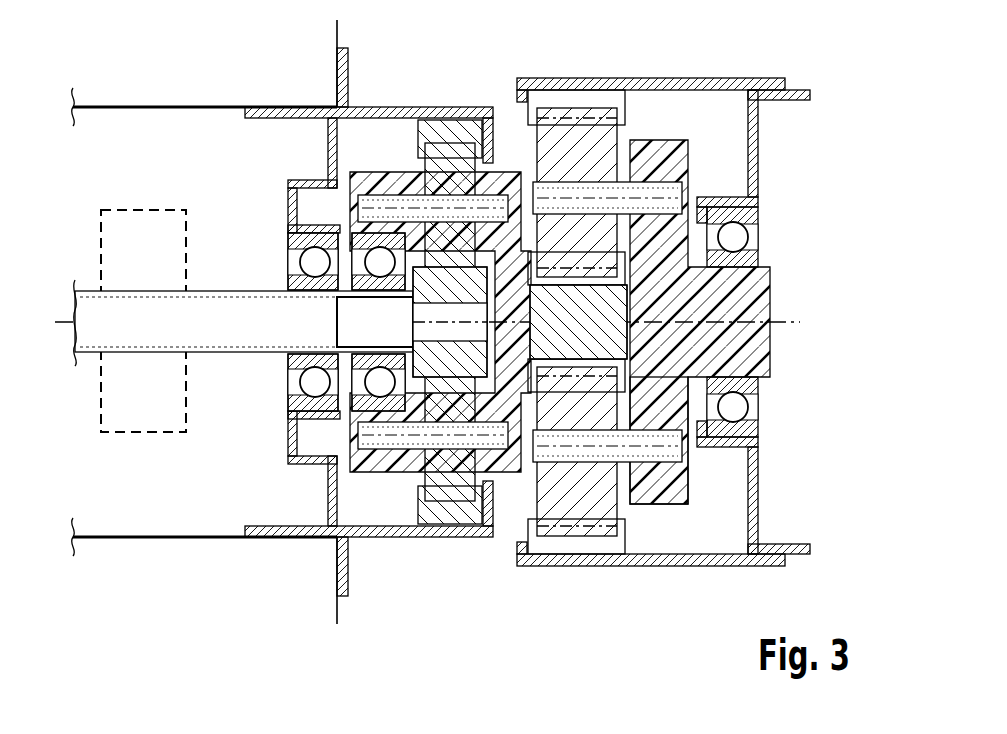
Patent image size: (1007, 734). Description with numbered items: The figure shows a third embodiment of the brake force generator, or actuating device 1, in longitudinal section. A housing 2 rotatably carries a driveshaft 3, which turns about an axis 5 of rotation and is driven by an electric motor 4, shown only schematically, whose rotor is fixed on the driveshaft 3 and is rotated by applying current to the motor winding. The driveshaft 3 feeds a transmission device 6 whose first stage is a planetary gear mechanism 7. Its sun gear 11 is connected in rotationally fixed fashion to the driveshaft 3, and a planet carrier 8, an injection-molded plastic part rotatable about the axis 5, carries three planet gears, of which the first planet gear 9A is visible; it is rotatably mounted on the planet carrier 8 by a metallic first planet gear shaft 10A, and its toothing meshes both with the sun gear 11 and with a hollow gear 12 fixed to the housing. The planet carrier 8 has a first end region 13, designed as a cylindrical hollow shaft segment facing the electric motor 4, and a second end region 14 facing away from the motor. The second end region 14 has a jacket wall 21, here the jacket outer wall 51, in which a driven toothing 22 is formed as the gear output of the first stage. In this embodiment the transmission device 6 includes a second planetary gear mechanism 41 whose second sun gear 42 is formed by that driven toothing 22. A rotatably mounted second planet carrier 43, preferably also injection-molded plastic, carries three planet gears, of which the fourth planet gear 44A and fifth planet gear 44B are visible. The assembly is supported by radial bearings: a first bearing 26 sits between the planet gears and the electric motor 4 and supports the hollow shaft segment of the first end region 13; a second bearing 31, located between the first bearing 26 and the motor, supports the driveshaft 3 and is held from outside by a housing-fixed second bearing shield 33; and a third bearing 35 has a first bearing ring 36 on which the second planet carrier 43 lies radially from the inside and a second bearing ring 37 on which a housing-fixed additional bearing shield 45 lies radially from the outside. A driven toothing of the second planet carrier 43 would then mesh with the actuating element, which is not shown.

The actuating device 1 is at (385, 564).
The housing 2 is at (160, 107).
The driveshaft 3 is at (200, 300).
The electric motor 4 is at (140, 432).
The axis of rotation 5 is at (213, 330).
The transmission device 6 is at (457, 572).
The planetary gear mechanism 7 is at (463, 81).
The planet carrier 8 is at (500, 182).
The first planet gear 9A is at (447, 155).
The first planet gear shaft 10A is at (468, 203).
The sun gear 11 is at (425, 345).
The hollow gear 12 is at (432, 132).
The first end region / hollow shaft segment 13 is at (383, 128).
The second end region 14 is at (574, 397).
The jacket wall 21 is at (679, 497).
The jacket outer wall 51 is at (632, 375).
The driven toothing 22 is at (607, 360).
The first bearing 26 is at (352, 235).
The second bearing 31 is at (303, 263).
The second bearing shield 33 is at (290, 183).
The third bearing 35 is at (752, 390).
The first bearing ring 36 is at (750, 255).
The second bearing ring 37 is at (752, 430).
The second planetary gear mechanism 41 is at (696, 105).
The second sun gear 42 is at (615, 338).
The second planet carrier 43 is at (730, 379).
The fourth planet gear 44A is at (590, 132).
The fifth planet gear 44B is at (586, 489).
The additional bearing shield 45 is at (757, 143).